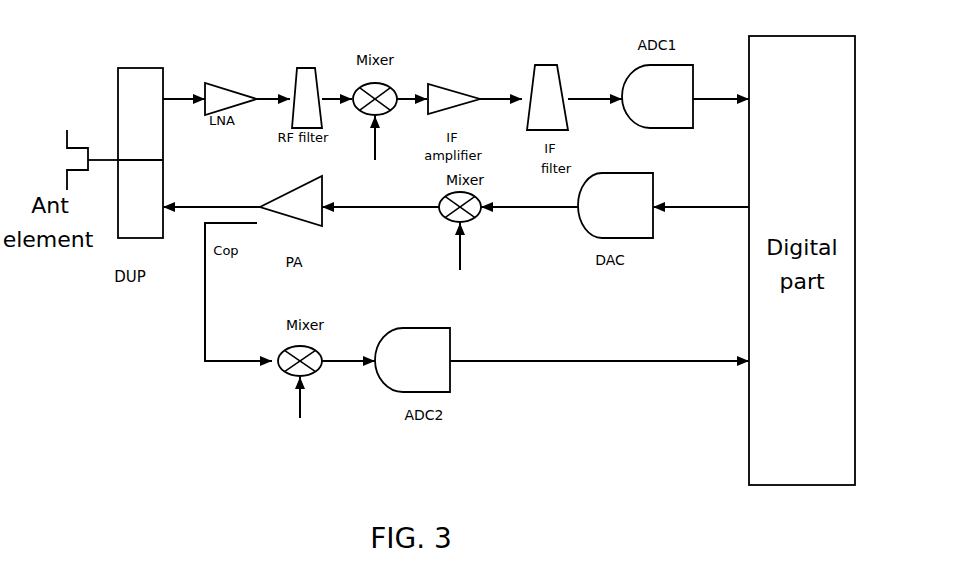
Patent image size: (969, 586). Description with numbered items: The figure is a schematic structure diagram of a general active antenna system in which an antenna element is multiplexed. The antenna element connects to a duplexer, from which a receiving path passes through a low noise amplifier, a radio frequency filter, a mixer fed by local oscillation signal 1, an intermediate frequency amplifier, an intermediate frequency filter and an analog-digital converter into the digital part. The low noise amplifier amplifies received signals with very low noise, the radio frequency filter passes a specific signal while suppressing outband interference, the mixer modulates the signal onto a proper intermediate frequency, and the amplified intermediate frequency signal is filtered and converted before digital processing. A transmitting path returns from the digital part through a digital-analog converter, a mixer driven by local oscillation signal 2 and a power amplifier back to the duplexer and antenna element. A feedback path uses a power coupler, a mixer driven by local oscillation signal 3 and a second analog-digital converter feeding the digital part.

The first local oscillator LO1 1 is at (372, 153).
The second local oscillator LO2 2 is at (457, 261).
The third local oscillator LO3 3 is at (296, 413).